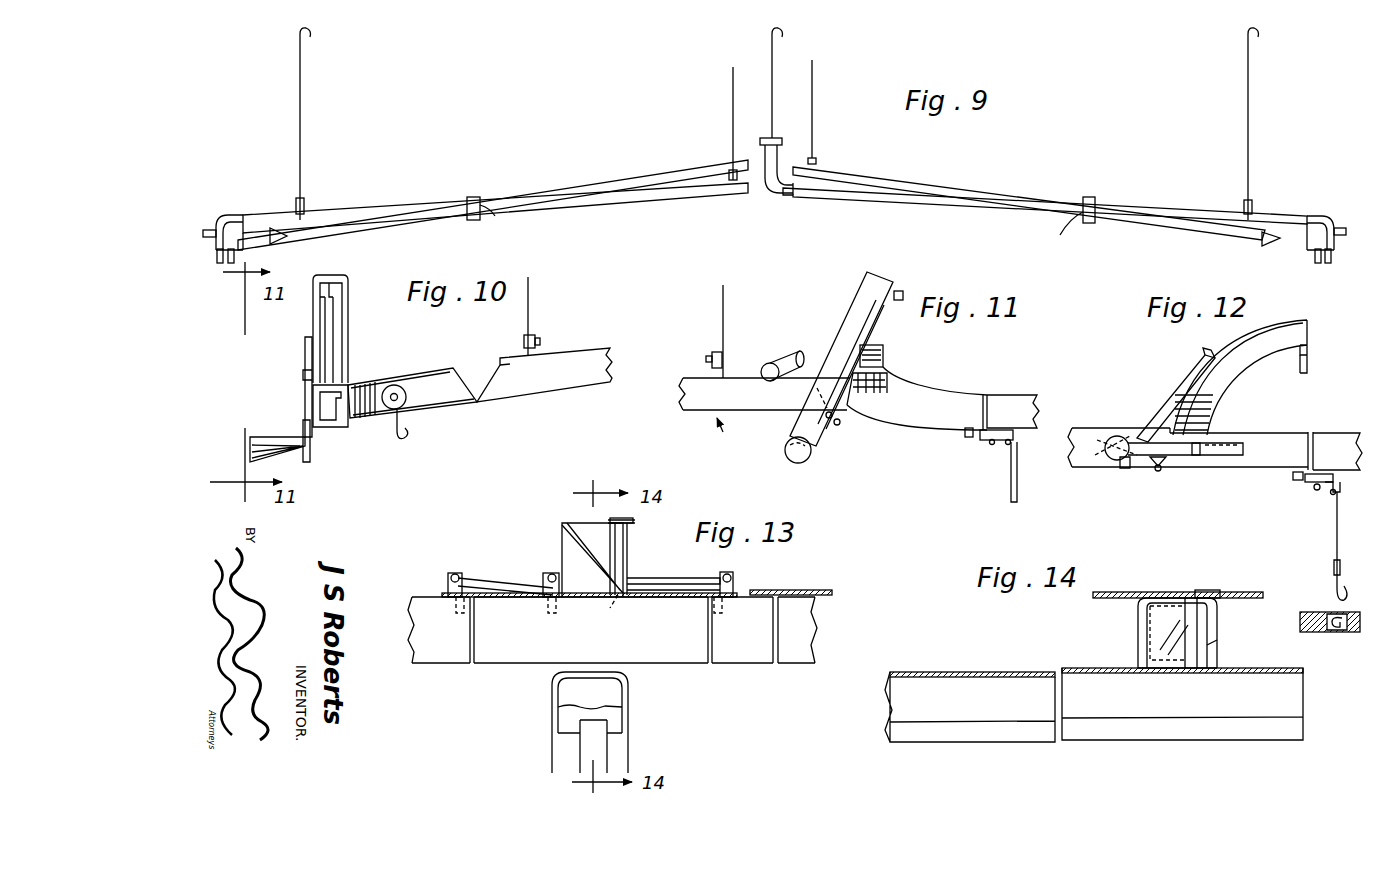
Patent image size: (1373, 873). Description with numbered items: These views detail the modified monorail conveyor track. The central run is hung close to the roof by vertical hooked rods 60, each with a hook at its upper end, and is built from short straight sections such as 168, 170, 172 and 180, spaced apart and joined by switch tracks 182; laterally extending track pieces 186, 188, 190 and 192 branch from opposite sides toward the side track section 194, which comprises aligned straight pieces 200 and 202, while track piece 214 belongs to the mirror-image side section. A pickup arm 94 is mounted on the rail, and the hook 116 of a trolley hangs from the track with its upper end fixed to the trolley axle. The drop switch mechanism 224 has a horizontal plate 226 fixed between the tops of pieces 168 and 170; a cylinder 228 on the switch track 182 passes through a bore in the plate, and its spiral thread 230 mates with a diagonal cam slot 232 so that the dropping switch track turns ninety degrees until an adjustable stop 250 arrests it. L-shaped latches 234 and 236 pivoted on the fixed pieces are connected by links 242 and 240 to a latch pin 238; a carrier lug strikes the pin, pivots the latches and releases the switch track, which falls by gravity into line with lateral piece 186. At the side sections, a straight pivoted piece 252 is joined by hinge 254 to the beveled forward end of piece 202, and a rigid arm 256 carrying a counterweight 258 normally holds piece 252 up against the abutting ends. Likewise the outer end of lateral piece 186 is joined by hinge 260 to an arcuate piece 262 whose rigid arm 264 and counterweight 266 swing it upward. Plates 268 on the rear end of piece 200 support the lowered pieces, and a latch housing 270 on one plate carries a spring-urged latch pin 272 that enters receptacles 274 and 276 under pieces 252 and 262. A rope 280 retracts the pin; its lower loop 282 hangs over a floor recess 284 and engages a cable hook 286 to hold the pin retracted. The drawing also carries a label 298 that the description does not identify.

In FIG. 9, the vertical rods 60 is at (301, 167).
In FIG. 10, the vertical rods 60 is at (530, 310).
In FIG. 11, the vertical rods 60 is at (722, 306).
In FIG. 9, the pickup arm 94 is at (1066, 237).
In FIG. 10, the hook 116 is at (392, 428).
In FIG. 13, the short straight track section 168 is at (435, 665).
In FIG. 13, the short straight track section 170 is at (750, 663).
In FIG. 14, the short straight track section 170 is at (1223, 640).
In FIG. 13, the short straight track section 172 is at (800, 596).
In FIG. 9, the short straight track section 180 is at (780, 147).
In FIG. 13, the switch track 182 is at (698, 665).
In FIG. 14, the switch track 182 is at (1103, 668).
In FIG. 9, the laterally extending track piece 186 is at (632, 177).
In FIG. 10, the laterally extending track piece 186 is at (573, 340).
In FIG. 13, the laterally extending track piece 186 is at (630, 720).
In FIG. 14, the laterally extending track piece 186 is at (967, 672).
In FIG. 9, the laterally extending track piece 188 is at (352, 197).
In FIG. 9, the laterally extending track piece 190 is at (877, 164).
In FIG. 9, the laterally extending track piece 192 is at (1160, 213).
In FIG. 11, the side track section 194 is at (738, 435).
In FIG. 11, the straight track piece 200 is at (1010, 378).
In FIG. 12, the straight track piece 200 is at (1355, 434).
In FIG. 11, the straight track piece 202 is at (697, 414).
In FIG. 12, the straight track piece 202 is at (1090, 428).
In FIG. 9, the track piece 214 is at (1327, 254).
In FIG. 13, the drop switch mechanism 224 is at (550, 541).
In FIG. 13, the horizontally extending plate 226 is at (442, 592).
In FIG. 14, the horizontally extending plate 226 is at (1117, 579).
In FIG. 13, the cylinder 228 is at (627, 571).
In FIG. 14, the cylinder 228 is at (1173, 592).
In FIG. 13, the spiral thread 230 is at (582, 523).
In FIG. 13, the cam slot 232 is at (595, 611).
In FIG. 13, the L-shaped latch 234 is at (737, 571).
In FIG. 13, the L-shaped latch 236 is at (453, 573).
In FIG. 13, the latch pin 238 is at (555, 575).
In FIG. 13, the link 240 is at (487, 580).
In FIG. 13, the link 242 is at (673, 585).
In FIG. 13, the adjustable stop 250 is at (630, 522).
In FIG. 10, the pivoted track piece 252 is at (348, 338).
In FIG. 11, the pivoted track piece 252 is at (850, 303).
In FIG. 12, the pivoted track piece 252 is at (1270, 420).
In FIG. 11, the hinge 254 is at (840, 414).
In FIG. 12, the hinge 254 is at (1168, 468).
In FIG. 11, the rigid arm 256 is at (817, 435).
In FIG. 9, the counterweight 258 is at (1347, 233).
In FIG. 10, the counterweight 258 is at (260, 437).
In FIG. 11, the counterweight 258 is at (803, 459).
In FIG. 12, the counterweight 258 is at (1098, 458).
In FIG. 10, the hinge 260 is at (477, 404).
In FIG. 9, the arcuate track piece 262 is at (1290, 247).
In FIG. 10, the arcuate track piece 262 is at (420, 371).
In FIG. 11, the arcuate track piece 262 is at (907, 387).
In FIG. 12, the arcuate track piece 262 is at (1273, 327).
In FIG. 11, the rigid arm 264 is at (798, 354).
In FIG. 12, the rigid arm 264 is at (1150, 425).
In FIG. 11, the counterweight 266 is at (767, 366).
In FIG. 12, the counterweight 266 is at (1122, 468).
In FIG. 12, the latch plate 268 is at (1323, 472).
In FIG. 12, the latch housing 270 is at (1323, 498).
In FIG. 12, the latch pin 272 is at (1310, 486).
In FIG. 12, the latch receptacle 274 is at (1310, 352).
In FIG. 12, the latch receptacle 276 is at (1295, 474).
In FIG. 12, the cable or rope 280 is at (1334, 565).
In FIG. 12, the loop 282 is at (1297, 481).
In FIG. 12, the recess 284 is at (1300, 619).
In FIG. 12, the cable hook 286 is at (1330, 632).
In FIG. 12, the cable 298 is at (1330, 532).